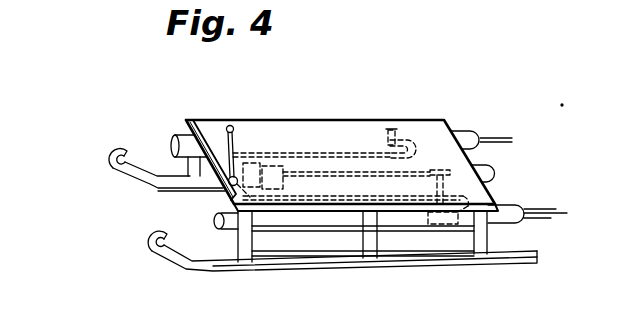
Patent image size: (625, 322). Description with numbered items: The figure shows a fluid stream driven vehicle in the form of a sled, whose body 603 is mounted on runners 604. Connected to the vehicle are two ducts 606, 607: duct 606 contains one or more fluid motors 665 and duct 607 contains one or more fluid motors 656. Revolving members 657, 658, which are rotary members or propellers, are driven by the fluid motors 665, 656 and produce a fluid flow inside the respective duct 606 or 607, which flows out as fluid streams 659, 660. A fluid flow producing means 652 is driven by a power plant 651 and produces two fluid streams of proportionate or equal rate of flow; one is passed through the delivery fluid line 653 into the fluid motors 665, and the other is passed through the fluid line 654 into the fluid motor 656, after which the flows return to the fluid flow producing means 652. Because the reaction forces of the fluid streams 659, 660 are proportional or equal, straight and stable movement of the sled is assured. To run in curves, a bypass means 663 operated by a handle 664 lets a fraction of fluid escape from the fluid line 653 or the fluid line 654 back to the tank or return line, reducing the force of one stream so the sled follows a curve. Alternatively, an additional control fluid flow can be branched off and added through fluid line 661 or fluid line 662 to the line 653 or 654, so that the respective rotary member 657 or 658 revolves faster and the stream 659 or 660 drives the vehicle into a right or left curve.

The body of the sled 603 is at (348, 126).
The runners 604 is at (107, 158).
The duct 606 is at (175, 143).
The duct 607 is at (218, 226).
The power plant 651 is at (270, 180).
The fluid flow producing means 652 is at (250, 173).
The delivery fluid line 653 is at (303, 154).
The fluid line 654 is at (337, 200).
The fluid motor 656 is at (447, 224).
The revolving member 657 is at (390, 128).
The revolving member 658 is at (430, 220).
The fluid stream 659 is at (508, 137).
The fluid stream 660 is at (538, 215).
The fluid line 661 is at (222, 162).
The fluid line 662 is at (222, 202).
The bypass means 663 is at (210, 188).
The handle 664 is at (232, 126).
The fluid motor 665 is at (404, 139).